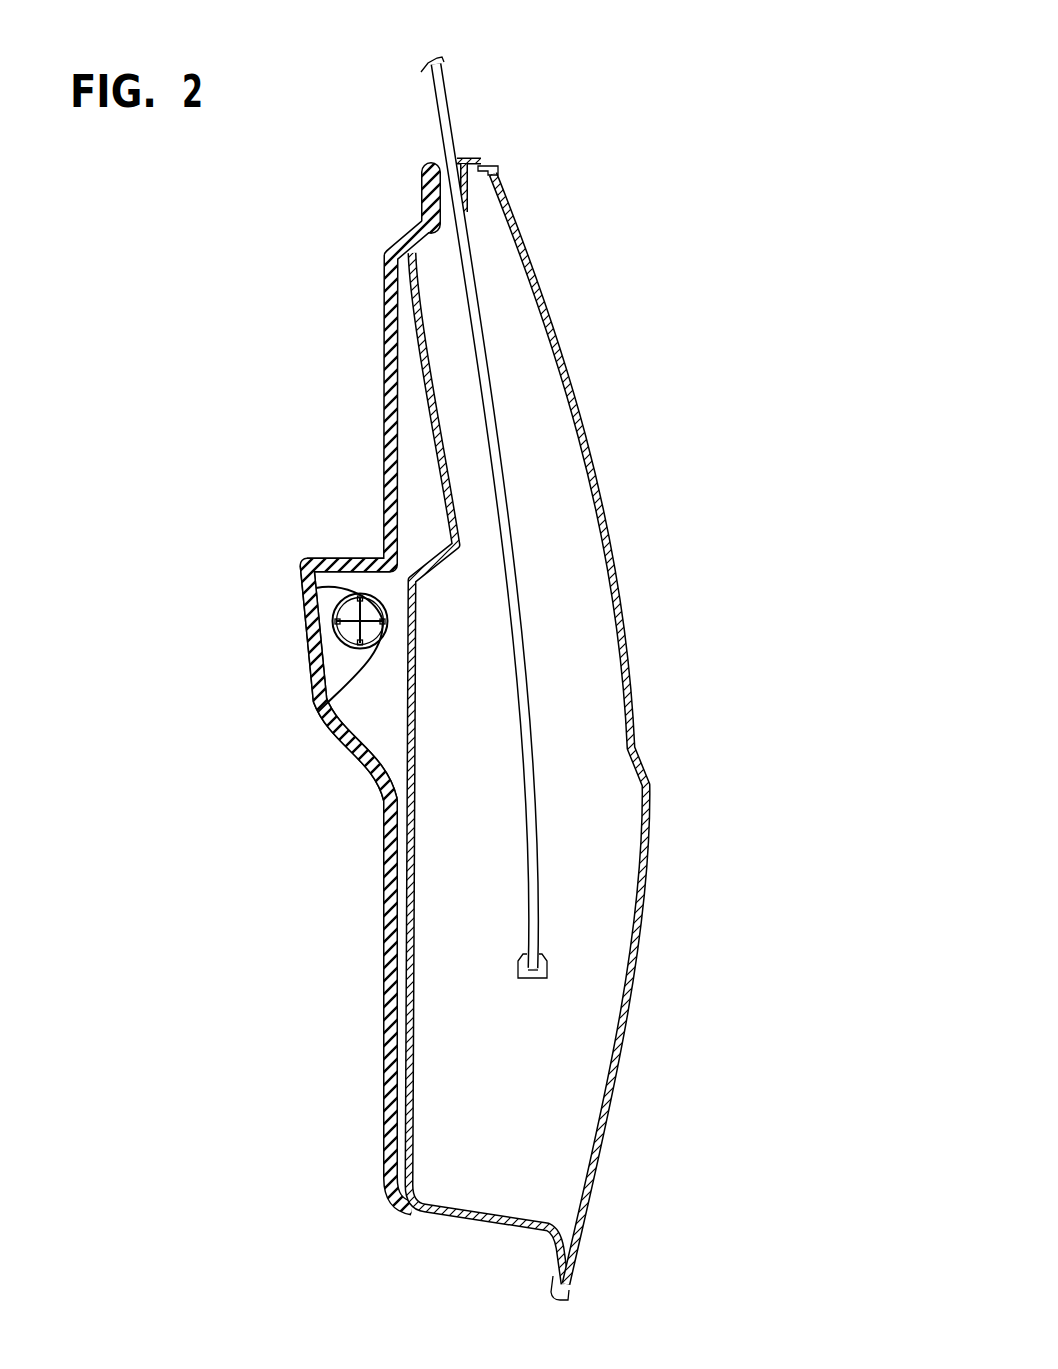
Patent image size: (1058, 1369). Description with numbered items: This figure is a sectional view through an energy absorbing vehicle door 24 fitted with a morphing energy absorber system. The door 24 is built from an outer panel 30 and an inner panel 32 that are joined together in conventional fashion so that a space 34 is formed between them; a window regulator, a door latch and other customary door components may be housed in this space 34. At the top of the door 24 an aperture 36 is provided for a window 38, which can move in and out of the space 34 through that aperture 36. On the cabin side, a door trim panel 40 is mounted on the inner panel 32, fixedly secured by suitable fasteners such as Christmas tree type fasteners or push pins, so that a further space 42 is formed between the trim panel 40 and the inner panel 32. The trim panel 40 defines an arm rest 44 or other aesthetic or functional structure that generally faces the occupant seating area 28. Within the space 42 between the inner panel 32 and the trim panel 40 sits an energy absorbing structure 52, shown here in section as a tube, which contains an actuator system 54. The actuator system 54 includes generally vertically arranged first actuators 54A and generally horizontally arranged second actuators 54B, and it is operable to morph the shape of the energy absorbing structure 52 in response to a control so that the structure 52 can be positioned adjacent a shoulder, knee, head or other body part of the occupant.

The energy absorbing vehicle door 24 is at (698, 143).
The occupant seating area 28 is at (166, 561).
The outer panel 30 is at (622, 568).
The inner panel 32 is at (413, 1098).
The space 34 is at (590, 752).
The aperture 36 is at (458, 158).
The window 38 is at (447, 102).
The door trim panel 40 is at (310, 682).
The space 42 is at (388, 696).
The arm rest 44 is at (337, 557).
The energy absorbing structure 52 is at (338, 590).
The actuator system 54 is at (310, 615).
The first actuators 54A is at (367, 595).
The second actuators 54B is at (318, 712).